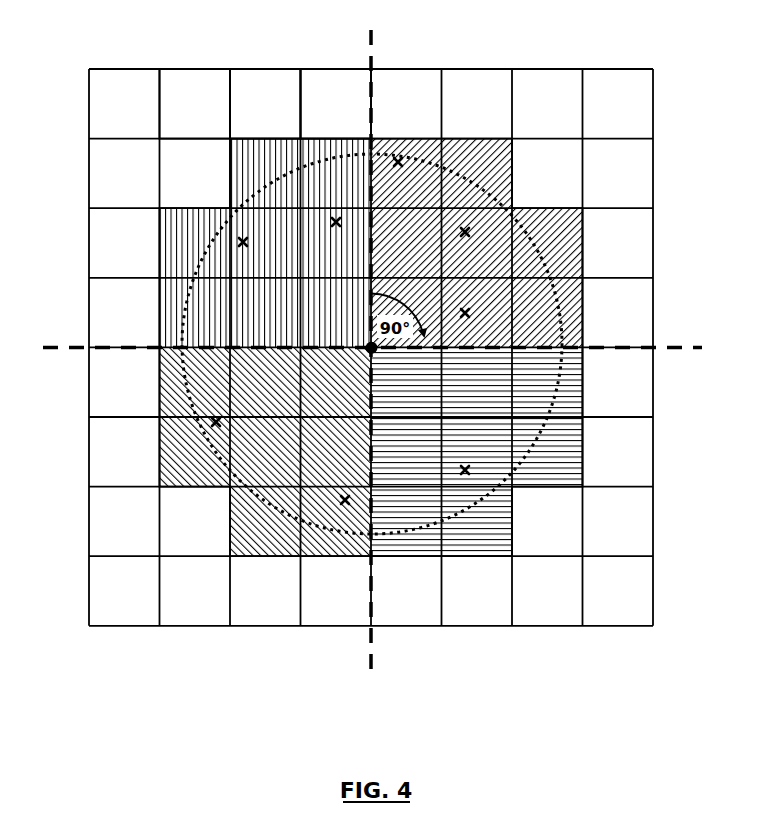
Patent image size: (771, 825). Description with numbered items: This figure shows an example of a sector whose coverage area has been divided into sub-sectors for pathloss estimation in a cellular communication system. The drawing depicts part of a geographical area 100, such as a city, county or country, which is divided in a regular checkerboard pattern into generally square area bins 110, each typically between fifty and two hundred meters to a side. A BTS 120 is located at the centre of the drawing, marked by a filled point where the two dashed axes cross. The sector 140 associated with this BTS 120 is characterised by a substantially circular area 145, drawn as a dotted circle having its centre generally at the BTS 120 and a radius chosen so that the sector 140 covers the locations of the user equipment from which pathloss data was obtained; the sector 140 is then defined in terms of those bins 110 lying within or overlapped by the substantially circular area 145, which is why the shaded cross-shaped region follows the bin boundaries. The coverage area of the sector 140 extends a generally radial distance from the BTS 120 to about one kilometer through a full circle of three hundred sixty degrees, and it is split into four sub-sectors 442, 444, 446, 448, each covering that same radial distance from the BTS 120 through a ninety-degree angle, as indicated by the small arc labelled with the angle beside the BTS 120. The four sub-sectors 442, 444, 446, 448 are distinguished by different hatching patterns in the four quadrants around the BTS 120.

The geographical area 100 is at (111, 61).
The area bins 110 is at (200, 80).
The BTS 120 is at (371, 348).
The sector 140 is at (376, 292).
The substantially circular area 145 is at (182, 327).
The sub-sector 442 is at (490, 267).
The sub-sector 444 is at (490, 398).
The sub-sector 446 is at (273, 457).
The sub-sector 448 is at (262, 268).